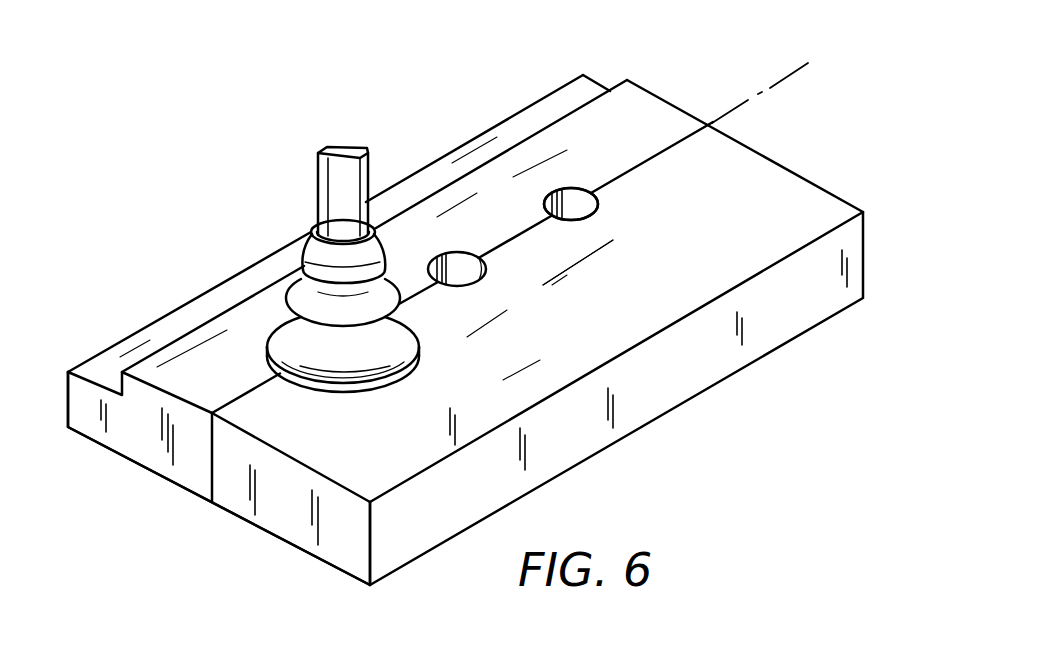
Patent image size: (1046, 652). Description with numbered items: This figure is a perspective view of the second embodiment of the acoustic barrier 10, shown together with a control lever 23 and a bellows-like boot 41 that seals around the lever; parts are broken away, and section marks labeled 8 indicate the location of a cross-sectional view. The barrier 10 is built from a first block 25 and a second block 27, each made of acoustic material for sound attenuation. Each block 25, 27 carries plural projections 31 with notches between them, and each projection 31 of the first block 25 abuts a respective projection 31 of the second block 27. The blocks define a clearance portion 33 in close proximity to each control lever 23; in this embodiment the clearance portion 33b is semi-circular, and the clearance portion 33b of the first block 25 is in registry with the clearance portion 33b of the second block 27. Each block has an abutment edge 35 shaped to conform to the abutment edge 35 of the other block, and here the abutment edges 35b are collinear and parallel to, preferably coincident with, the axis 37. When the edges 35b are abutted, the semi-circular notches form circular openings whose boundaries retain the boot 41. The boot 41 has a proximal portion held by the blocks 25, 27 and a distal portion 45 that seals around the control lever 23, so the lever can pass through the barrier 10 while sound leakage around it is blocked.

The barrier 10 is at (622, 50).
The control lever 23 is at (366, 175).
The first block 25 is at (173, 465).
The second block 27 is at (710, 370).
The projection 31 is at (527, 312).
The clearance portion 33 is at (610, 222).
The clearance portion 33b is at (572, 196).
The abutment edge 35 is at (223, 380).
The abutment edge 35b is at (620, 175).
The axis 37 is at (770, 87).
The bellows-like boot 41 is at (389, 272).
The distal portion 45 is at (311, 225).
The section line 8- 8 is at (165, 237).